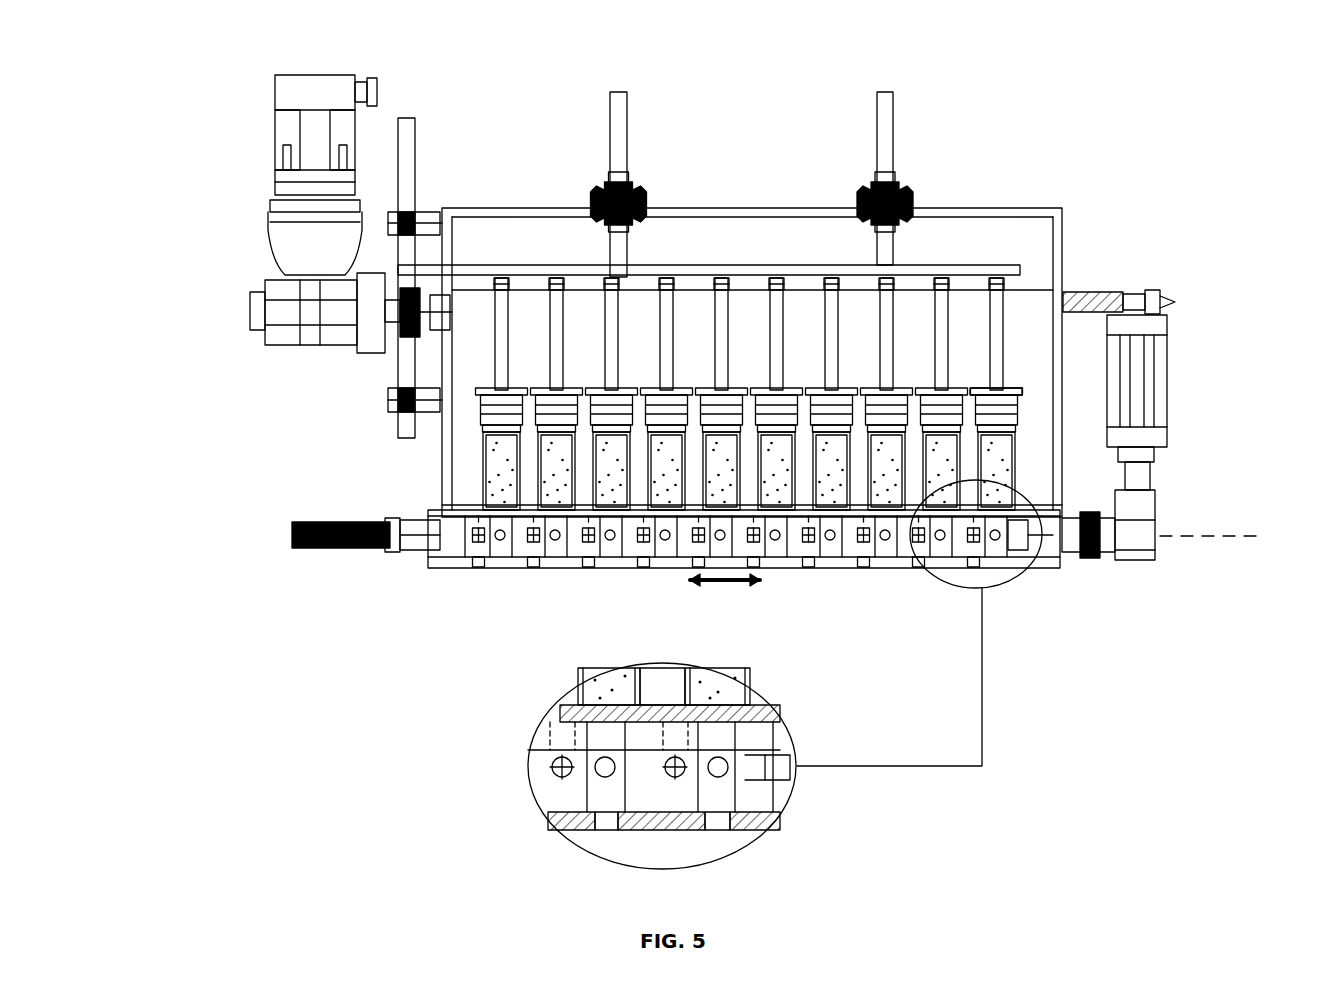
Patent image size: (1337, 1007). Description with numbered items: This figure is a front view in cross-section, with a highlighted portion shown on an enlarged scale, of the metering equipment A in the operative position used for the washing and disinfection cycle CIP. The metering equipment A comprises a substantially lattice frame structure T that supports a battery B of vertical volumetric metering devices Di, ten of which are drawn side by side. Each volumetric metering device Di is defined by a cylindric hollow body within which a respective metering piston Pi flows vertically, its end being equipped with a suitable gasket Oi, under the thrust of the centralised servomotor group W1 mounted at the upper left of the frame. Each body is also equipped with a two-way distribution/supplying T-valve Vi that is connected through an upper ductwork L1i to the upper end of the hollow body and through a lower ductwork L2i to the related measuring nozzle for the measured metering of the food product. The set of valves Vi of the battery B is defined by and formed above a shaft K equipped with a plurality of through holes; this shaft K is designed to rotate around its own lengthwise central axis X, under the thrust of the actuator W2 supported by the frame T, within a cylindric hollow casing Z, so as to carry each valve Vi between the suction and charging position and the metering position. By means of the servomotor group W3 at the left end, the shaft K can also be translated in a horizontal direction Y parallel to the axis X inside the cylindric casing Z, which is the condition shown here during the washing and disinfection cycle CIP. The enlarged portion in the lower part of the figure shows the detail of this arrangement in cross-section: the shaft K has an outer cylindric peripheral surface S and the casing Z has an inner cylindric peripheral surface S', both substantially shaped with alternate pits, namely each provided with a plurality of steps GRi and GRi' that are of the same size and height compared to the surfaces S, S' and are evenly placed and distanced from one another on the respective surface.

The metering equipment A is at (1112, 118).
The lattice frame structure T is at (587, 108).
The battery of volumetric metering devices B is at (806, 188).
The volumetric metering device Di is at (500, 262).
The metering piston Pi is at (1005, 325).
The gasket Oi is at (1015, 398).
The centralised servomotor group W1 is at (265, 178).
The actuator W2 is at (1190, 390).
The servomotor group W3 is at (300, 500).
The shaft K is at (462, 527).
The two-way distribution/supplying T-valve Vi is at (478, 573).
The steps of the shaft surface GRi is at (905, 582).
The steps of the casing surface GRi' is at (639, 829).
The horizontal translation direction Y is at (725, 598).
The central axis X is at (1221, 537).
The outer cylindric peripheral surface of the shaft S is at (622, 704).
The inner cylindric peripheral surface of the casing S' is at (664, 679).
The upper ductwork L1i is at (718, 716).
The lower ductwork L2i is at (720, 815).
The cylindric hollow casing Z is at (560, 830).
The Cleaning-in-Place washing and disinfection cycle CIP is at (1140, 722).